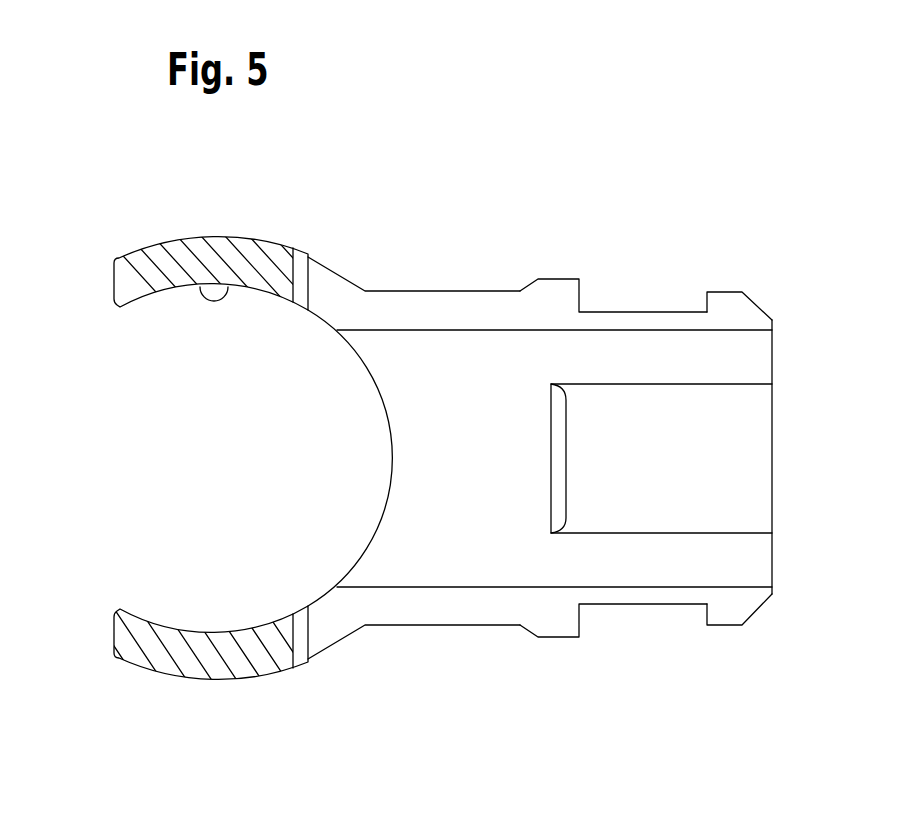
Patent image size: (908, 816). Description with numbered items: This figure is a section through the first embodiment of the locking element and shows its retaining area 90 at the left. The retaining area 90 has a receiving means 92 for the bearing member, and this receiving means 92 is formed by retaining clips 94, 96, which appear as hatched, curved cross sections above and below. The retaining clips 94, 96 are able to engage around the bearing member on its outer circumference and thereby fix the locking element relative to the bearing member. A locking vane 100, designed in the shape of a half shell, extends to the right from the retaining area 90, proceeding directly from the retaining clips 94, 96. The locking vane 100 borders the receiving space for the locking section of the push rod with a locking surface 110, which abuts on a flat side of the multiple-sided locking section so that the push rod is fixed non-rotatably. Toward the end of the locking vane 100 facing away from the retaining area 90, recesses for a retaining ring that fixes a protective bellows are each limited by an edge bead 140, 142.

The retaining area 90 is at (231, 457).
The receiving means 92 is at (228, 287).
The retaining clip 94 is at (143, 250).
The retaining clip 96 is at (145, 670).
The locking vane 100 is at (582, 433).
The locking surface 110 is at (731, 462).
The edge bead 140 is at (723, 290).
The edge bead 142 is at (560, 278).